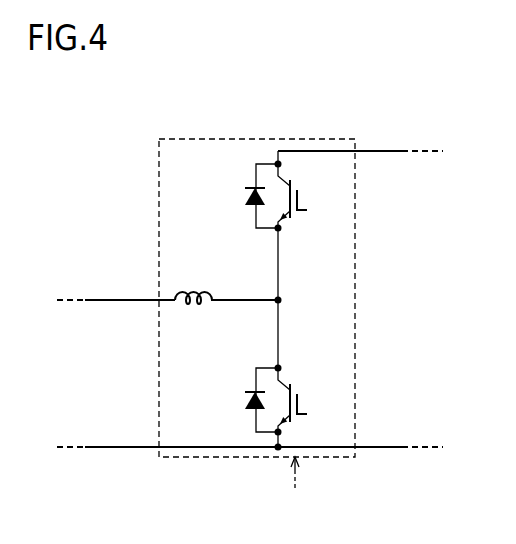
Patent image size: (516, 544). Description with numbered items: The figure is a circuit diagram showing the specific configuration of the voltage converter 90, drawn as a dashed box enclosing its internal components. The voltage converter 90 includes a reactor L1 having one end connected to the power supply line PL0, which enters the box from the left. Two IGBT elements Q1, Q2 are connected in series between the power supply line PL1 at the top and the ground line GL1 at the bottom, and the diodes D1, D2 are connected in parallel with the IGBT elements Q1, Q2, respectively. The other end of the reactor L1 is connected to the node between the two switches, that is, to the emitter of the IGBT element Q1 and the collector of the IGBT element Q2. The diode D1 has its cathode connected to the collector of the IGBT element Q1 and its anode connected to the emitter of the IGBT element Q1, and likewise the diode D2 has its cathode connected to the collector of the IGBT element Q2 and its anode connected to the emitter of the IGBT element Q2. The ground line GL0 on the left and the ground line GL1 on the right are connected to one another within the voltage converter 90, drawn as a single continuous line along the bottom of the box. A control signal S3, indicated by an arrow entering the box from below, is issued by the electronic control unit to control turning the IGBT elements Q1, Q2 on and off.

The voltage converter 90 is at (159, 136).
The power supply line PL1 is at (388, 149).
The power supply line PL0 is at (116, 298).
The ground line GL0 is at (118, 445).
The ground line GL1 is at (387, 445).
The reactor L1 is at (196, 284).
The diode D1 is at (245, 196).
The diode D2 is at (245, 400).
The IGBT element Q1 is at (306, 196).
The IGBT element Q2 is at (306, 400).
The control signal S3 is at (296, 485).